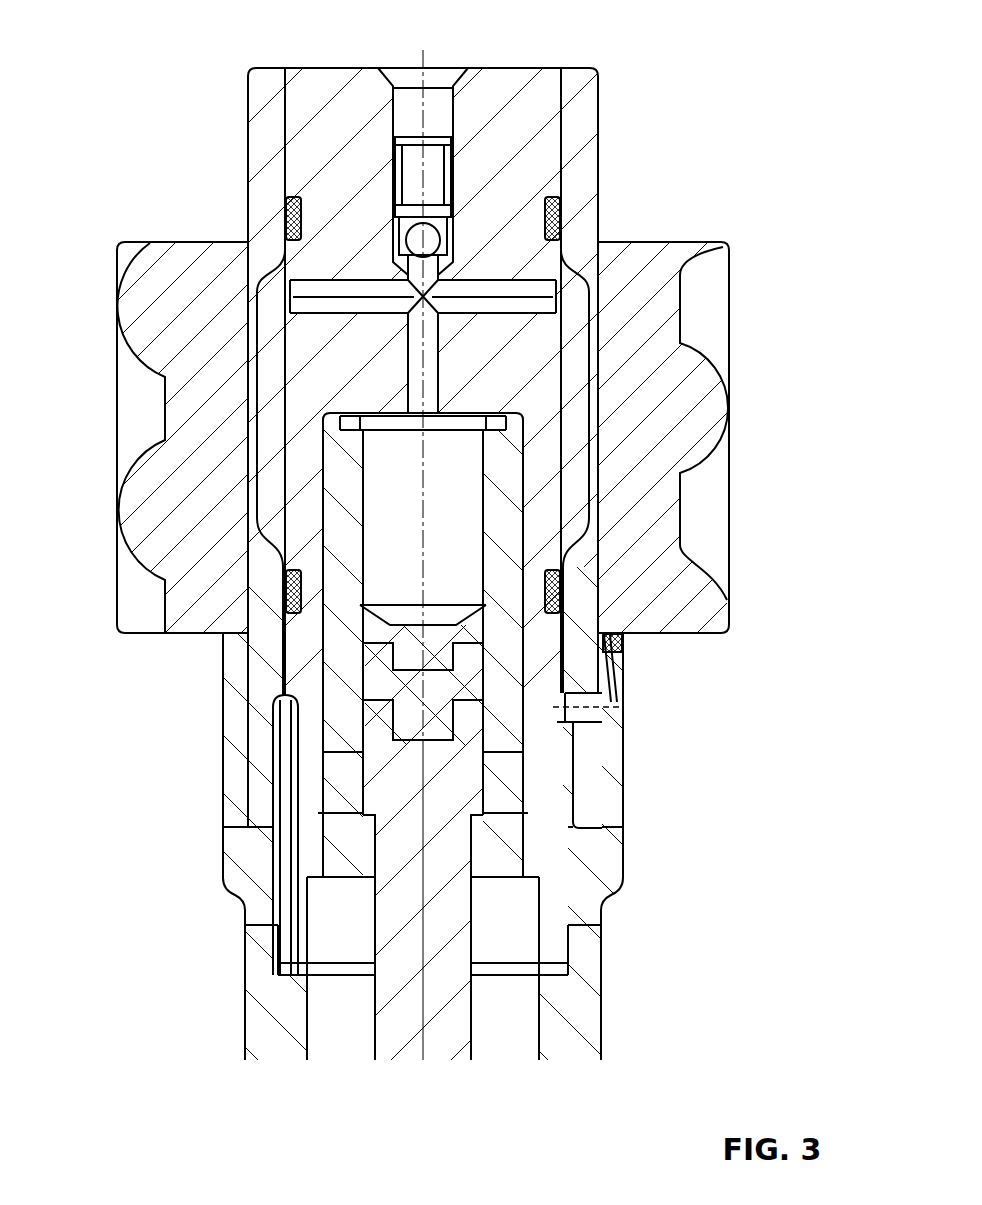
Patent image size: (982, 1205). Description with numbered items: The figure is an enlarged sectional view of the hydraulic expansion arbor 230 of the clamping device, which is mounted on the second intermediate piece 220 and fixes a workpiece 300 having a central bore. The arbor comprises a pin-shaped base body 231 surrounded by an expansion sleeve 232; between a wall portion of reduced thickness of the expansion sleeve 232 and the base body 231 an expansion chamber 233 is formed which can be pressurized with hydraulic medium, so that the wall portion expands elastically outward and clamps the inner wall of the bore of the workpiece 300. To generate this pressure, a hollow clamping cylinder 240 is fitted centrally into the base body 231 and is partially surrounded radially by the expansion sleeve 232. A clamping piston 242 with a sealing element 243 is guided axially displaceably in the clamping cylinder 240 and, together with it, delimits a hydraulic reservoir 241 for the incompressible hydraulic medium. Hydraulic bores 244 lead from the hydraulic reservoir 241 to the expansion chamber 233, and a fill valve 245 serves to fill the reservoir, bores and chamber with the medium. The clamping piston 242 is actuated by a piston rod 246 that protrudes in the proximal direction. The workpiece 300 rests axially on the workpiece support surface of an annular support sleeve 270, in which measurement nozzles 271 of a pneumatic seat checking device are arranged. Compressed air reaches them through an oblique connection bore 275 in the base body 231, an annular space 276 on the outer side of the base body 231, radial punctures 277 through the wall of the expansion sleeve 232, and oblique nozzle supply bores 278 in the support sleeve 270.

The second intermediate piece 220 is at (595, 1020).
The hydraulic expansion arbor 230 is at (398, 564).
The base body 231 is at (565, 130).
The expansion sleeve 232 is at (600, 178).
The expansion chamber 233 is at (600, 262).
The clamping cylinder 240 is at (295, 537).
The hydraulic reservoir 241 is at (400, 528).
The clamping piston 242 is at (345, 700).
The sealing element 243 is at (380, 680).
The hydraulic bores 244 is at (330, 287).
The fill valve 245 is at (437, 175).
The piston rod 246 is at (385, 1050).
The support sleeve 270 is at (438, 846).
The measurement nozzles 271 is at (610, 650).
The connection bore 275 is at (298, 890).
The annular space 276 is at (590, 765).
The radial punctures 277 is at (575, 730).
The nozzle supply bores 278 is at (596, 693).
The workpiece 300 is at (710, 412).